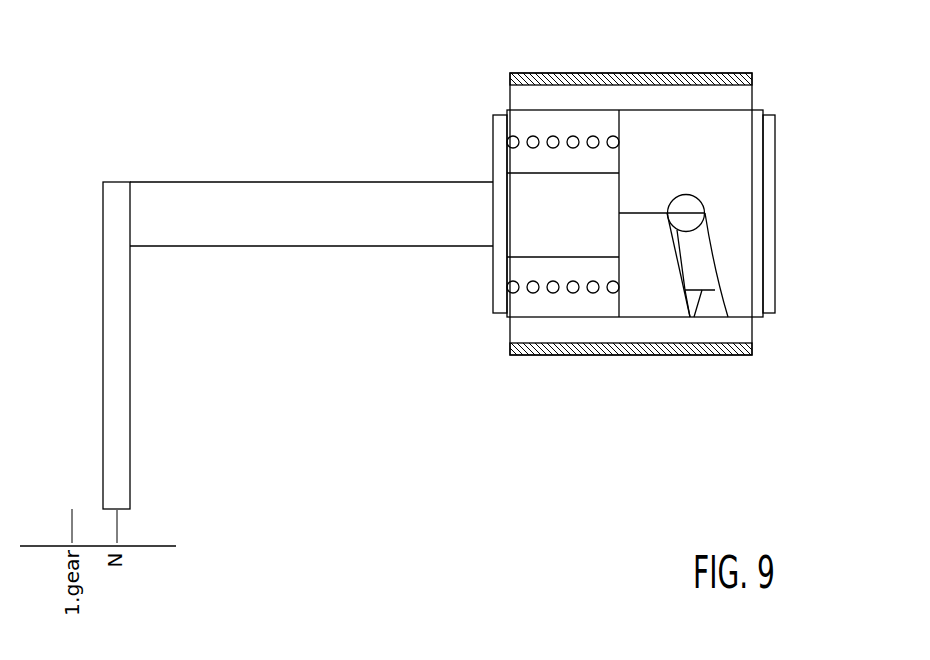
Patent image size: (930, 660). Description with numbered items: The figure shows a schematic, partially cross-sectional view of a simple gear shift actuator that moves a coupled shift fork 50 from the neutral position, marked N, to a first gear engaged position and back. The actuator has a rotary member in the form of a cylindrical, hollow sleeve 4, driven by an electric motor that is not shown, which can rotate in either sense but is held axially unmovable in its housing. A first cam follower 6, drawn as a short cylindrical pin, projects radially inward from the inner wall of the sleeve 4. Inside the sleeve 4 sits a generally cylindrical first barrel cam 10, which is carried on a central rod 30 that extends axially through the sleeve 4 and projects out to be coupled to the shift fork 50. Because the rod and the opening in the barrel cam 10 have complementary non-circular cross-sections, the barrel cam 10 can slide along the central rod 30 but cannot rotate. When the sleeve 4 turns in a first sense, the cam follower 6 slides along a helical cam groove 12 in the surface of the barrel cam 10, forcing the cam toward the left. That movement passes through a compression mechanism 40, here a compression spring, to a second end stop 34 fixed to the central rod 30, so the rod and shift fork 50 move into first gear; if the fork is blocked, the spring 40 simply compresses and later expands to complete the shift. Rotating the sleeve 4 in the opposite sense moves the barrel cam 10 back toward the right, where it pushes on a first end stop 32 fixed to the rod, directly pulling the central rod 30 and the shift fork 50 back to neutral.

The sleeve 4 is at (696, 72).
The first cam follower 6 is at (685, 195).
The first barrel cam 10 is at (659, 277).
The helical cam groove 12 is at (692, 278).
The central rod 30 is at (203, 180).
The first end stop 32 is at (775, 180).
The second end stop 34 is at (493, 130).
The compression mechanism 40 is at (556, 149).
The shift fork 50 is at (130, 372).